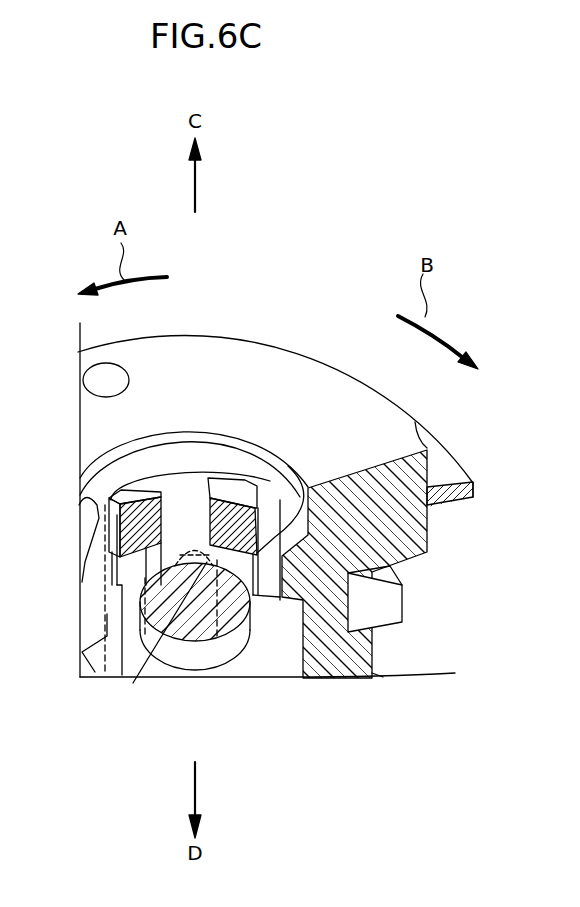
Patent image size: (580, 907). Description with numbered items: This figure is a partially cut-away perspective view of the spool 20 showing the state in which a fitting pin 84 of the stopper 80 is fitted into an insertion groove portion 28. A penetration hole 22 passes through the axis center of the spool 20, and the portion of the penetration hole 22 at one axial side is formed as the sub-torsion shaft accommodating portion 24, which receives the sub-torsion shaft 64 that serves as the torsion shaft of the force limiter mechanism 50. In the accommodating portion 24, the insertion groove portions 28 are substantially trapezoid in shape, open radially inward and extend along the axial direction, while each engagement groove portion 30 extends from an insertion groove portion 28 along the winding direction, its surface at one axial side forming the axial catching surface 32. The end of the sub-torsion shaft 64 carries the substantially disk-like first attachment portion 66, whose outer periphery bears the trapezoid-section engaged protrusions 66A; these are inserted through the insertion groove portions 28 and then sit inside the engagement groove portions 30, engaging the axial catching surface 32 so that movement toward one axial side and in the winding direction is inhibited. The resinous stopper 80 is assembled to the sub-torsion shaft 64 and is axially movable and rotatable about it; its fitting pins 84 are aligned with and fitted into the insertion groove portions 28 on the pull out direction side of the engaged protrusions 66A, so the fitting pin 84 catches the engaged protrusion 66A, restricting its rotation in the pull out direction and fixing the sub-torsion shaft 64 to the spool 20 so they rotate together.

The spool 20 is at (331, 358).
The penetration hole 22 is at (262, 470).
The sub-torsion shaft accommodating portion 24 is at (167, 457).
The insertion groove portion 28 is at (212, 484).
The engagement groove portion 30 is at (190, 546).
The axial catching surface 32 is at (392, 566).
The force limiter mechanism 50 is at (267, 731).
The sub-torsion shaft 64 is at (230, 682).
The first attachment portion 66 is at (157, 665).
The engaged protrusion 66A is at (104, 672).
The stopper 80 is at (265, 478).
The fitting pin 84 is at (254, 487).